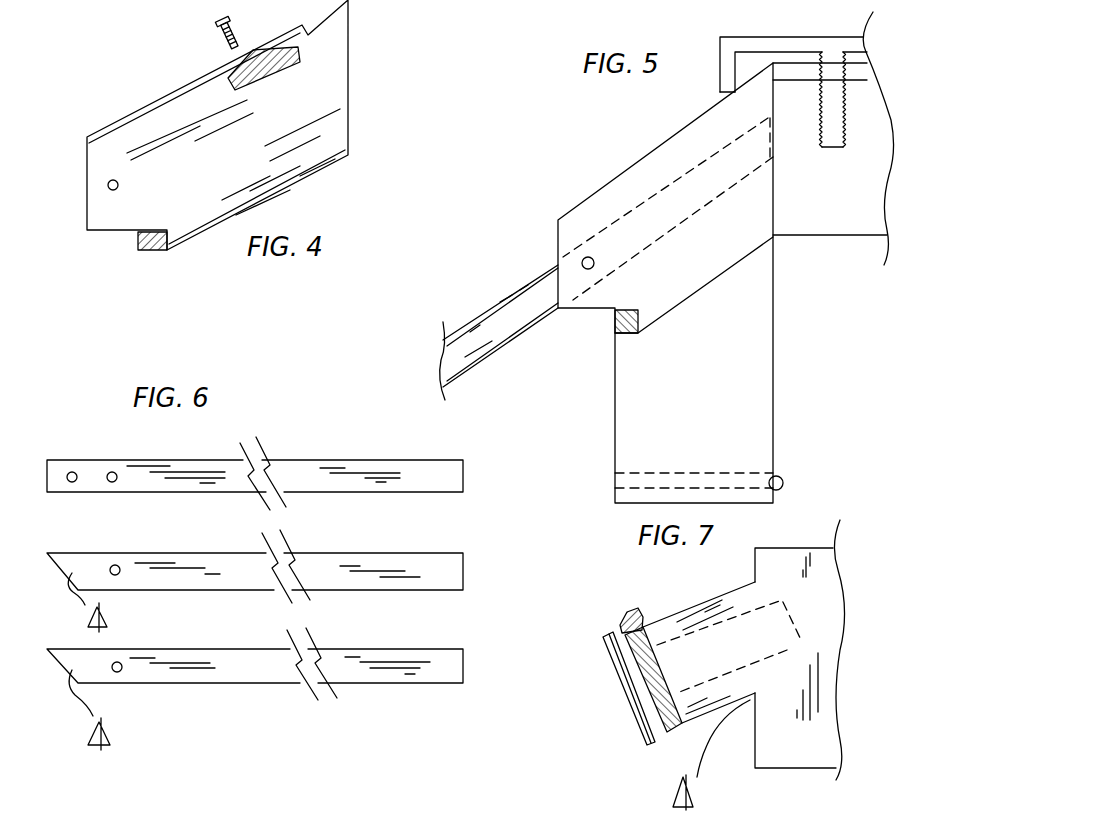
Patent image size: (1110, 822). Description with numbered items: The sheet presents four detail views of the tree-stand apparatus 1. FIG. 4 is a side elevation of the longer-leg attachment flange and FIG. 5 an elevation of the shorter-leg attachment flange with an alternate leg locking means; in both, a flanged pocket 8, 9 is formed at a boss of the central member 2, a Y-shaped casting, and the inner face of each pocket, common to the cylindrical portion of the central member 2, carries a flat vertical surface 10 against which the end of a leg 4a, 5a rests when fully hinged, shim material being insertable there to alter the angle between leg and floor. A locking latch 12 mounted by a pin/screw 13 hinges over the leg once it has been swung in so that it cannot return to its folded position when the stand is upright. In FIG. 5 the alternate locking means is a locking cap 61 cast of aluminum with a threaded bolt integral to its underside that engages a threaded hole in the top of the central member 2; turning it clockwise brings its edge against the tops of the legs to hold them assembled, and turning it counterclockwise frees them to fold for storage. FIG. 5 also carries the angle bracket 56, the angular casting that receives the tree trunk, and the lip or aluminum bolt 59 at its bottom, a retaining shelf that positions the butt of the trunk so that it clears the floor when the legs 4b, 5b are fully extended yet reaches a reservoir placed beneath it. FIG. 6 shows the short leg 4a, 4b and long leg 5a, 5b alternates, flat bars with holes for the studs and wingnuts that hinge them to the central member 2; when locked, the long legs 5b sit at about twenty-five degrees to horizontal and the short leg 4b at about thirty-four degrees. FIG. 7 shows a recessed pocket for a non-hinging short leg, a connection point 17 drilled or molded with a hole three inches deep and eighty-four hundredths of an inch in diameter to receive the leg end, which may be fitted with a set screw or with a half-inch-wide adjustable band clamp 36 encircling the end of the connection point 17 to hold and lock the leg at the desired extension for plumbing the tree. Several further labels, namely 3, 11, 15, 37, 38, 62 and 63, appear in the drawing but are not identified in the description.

In FIG. 6, the apparatus 1 is at (96, 602).
In FIG. 6, the central member 2 is at (98, 710).
In FIG. 5, the post 3 is at (742, 391).
In FIG. 6, the short leg 4a is at (337, 551).
In FIG. 5, the short leg 4b is at (499, 332).
In FIG. 6, the short leg 4b is at (255, 458).
In FIG. 6, the long leg 5a is at (380, 649).
In FIG. 5, the long leg 5b is at (499, 332).
In FIG. 6, the long leg 5b is at (300, 463).
In FIG. 5, the flanged pocket 8 is at (637, 163).
In FIG. 4, the flanged pocket 9 is at (173, 87).
In FIG. 4, the flat vertical surface 10 is at (341, 63).
In FIG. 5, the flat vertical surface 10 is at (779, 193).
In FIG. 4, the lower clip 11 is at (153, 252).
In FIG. 4, the locking latch 12 is at (273, 70).
In FIG. 4, the pin/screw 13 is at (213, 36).
In FIG. 4, the hole 15 is at (113, 191).
In FIG. 7, the connection point 17 is at (790, 657).
In FIG. 7, the adjustable band clamp 36 is at (622, 610).
In FIG. 7, the clamp block 37 is at (652, 742).
In FIG. 7, the clamp plate 38 is at (615, 686).
In FIG. 5, the angle bracket 56 is at (728, 370).
In FIG. 5, the lip or aluminum bolt 59 is at (782, 482).
In FIG. 5, the locking cap 61 is at (762, 40).
In FIG. 5, the bolt 62 is at (847, 94).
In FIG. 5, the thread 63 is at (835, 121).